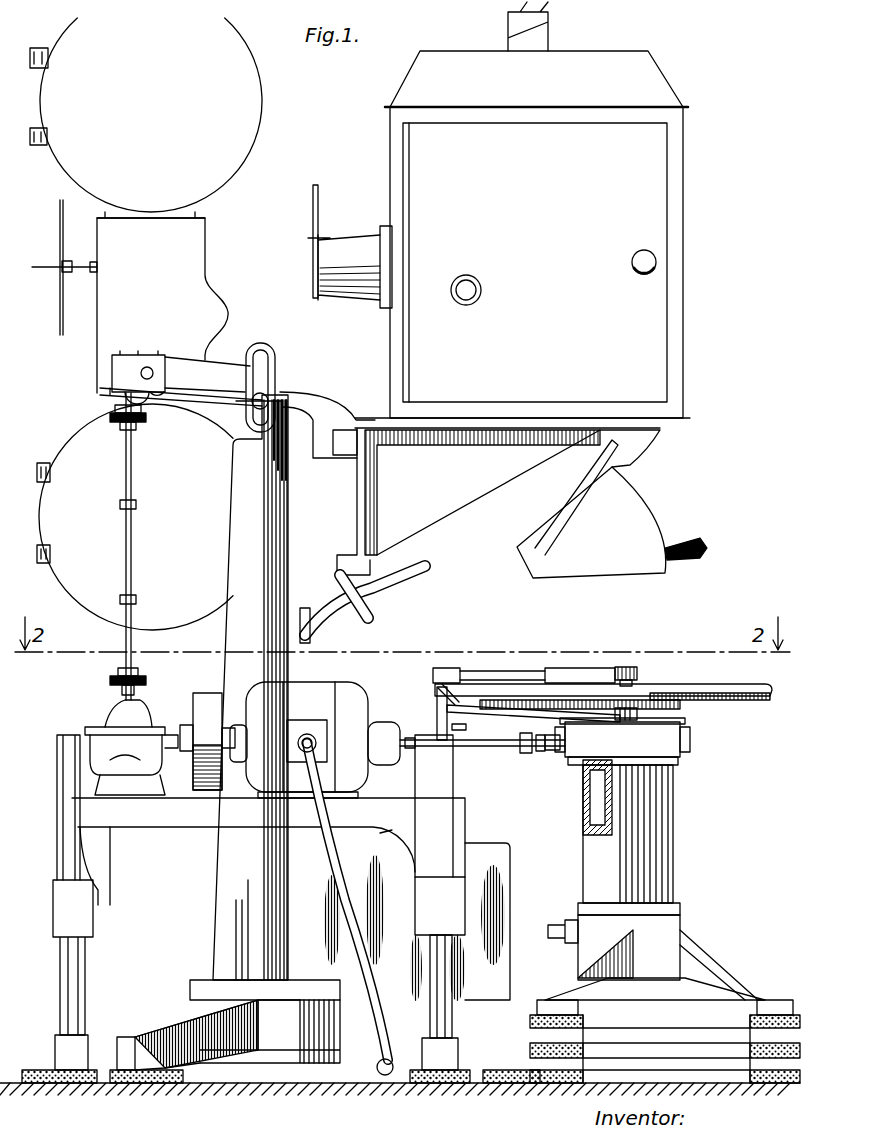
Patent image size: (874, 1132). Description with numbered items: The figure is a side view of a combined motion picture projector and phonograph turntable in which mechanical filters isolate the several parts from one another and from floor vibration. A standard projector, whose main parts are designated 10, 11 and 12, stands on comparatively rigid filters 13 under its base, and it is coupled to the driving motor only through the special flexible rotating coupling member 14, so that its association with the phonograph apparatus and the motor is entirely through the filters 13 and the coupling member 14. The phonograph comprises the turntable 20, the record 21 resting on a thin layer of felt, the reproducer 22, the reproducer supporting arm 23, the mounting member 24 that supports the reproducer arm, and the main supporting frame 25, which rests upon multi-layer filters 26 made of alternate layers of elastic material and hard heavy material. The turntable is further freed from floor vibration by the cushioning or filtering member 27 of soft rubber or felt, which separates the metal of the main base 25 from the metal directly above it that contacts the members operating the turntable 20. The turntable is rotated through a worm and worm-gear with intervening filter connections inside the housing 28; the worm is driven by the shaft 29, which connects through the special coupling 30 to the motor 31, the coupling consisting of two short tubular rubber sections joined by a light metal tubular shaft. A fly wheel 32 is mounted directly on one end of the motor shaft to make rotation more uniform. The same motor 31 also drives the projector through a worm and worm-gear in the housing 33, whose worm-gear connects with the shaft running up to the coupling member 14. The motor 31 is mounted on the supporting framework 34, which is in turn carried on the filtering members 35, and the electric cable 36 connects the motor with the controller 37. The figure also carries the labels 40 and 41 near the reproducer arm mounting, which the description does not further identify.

The projector main part 10 is at (183, 243).
The projector main part 11 is at (640, 175).
The projector main part 12 is at (290, 520).
The rigid filters 13 is at (495, 1050).
The flexible rotating coupling member 14 is at (160, 683).
The turntable 20 is at (750, 690).
The record 21 is at (705, 700).
The reproducer 22 is at (600, 675).
The reproducer supporting arm 23 is at (432, 672).
The mounting member 24 is at (437, 713).
The main supporting frame 25 is at (648, 812).
The multi-layer filters 26 is at (750, 1050).
The cushioning or filtering member 27 is at (590, 800).
The housing 28 is at (660, 745).
The shaft 29 is at (560, 758).
The special coupling 30 is at (470, 748).
The motor 31 is at (310, 690).
The fly wheel 32 is at (207, 690).
The housing 33 is at (118, 738).
The supporting framework 34 is at (205, 833).
The filtering members 35 is at (415, 1068).
The electric cable 36 is at (340, 856).
The controller 37 is at (380, 838).
The link 40 is at (438, 690).
The pin 41 is at (466, 729).